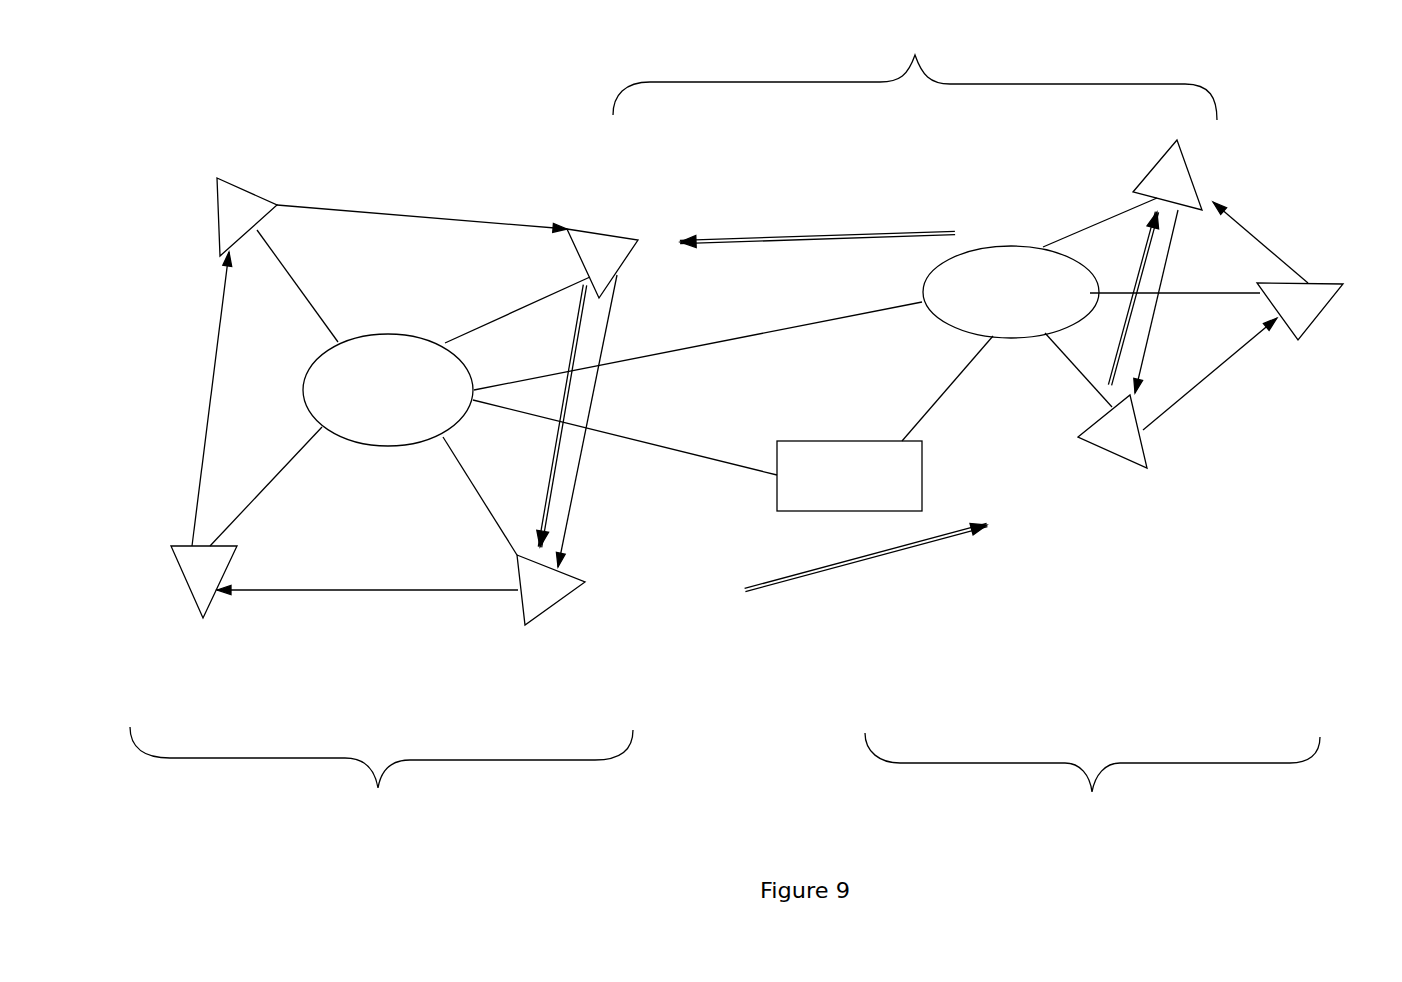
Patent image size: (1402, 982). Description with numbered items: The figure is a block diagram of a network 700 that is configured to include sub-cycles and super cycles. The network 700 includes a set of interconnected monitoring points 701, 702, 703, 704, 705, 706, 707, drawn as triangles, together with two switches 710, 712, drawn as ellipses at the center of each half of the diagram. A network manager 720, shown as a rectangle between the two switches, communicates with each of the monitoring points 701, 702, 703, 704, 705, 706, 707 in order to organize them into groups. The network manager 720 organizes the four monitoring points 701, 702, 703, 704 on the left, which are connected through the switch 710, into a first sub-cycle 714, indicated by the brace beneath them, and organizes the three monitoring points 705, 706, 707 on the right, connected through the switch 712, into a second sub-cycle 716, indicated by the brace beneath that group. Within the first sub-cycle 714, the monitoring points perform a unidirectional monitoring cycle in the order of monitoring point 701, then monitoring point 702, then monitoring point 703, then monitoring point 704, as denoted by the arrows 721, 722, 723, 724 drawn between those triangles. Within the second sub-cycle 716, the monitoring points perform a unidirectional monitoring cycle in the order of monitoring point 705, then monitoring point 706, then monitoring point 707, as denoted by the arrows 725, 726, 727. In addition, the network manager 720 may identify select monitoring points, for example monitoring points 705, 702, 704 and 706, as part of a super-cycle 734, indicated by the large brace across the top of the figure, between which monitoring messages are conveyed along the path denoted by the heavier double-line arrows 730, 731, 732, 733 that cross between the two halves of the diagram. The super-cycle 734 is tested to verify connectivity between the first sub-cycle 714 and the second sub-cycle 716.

The network 700 is at (237, 87).
The monitoring point 701 is at (212, 210).
The monitoring point 702 is at (595, 230).
The monitoring point 703 is at (183, 582).
The monitoring point 704 is at (520, 615).
The monitoring point 705 is at (1160, 153).
The monitoring point 706 is at (1112, 458).
The monitoring point 707 is at (1308, 333).
The switch 710 is at (307, 388).
The switch 712 is at (935, 318).
The first sub-cycle 714 is at (381, 785).
The second sub-cycle 716 is at (1092, 790).
The network manager 720 is at (777, 487).
The arrow 721 is at (352, 210).
The arrow 722 is at (582, 448).
The arrow 723 is at (303, 592).
The arrow 724 is at (205, 412).
The arrow 725 is at (1153, 330).
The arrow 726 is at (1232, 368).
The arrow 727 is at (1247, 230).
The arrow 730 is at (757, 243).
The arrow 731 is at (570, 315).
The arrow 732 is at (833, 570).
The arrow 733 is at (1142, 243).
The super-cycle 734 is at (915, 72).